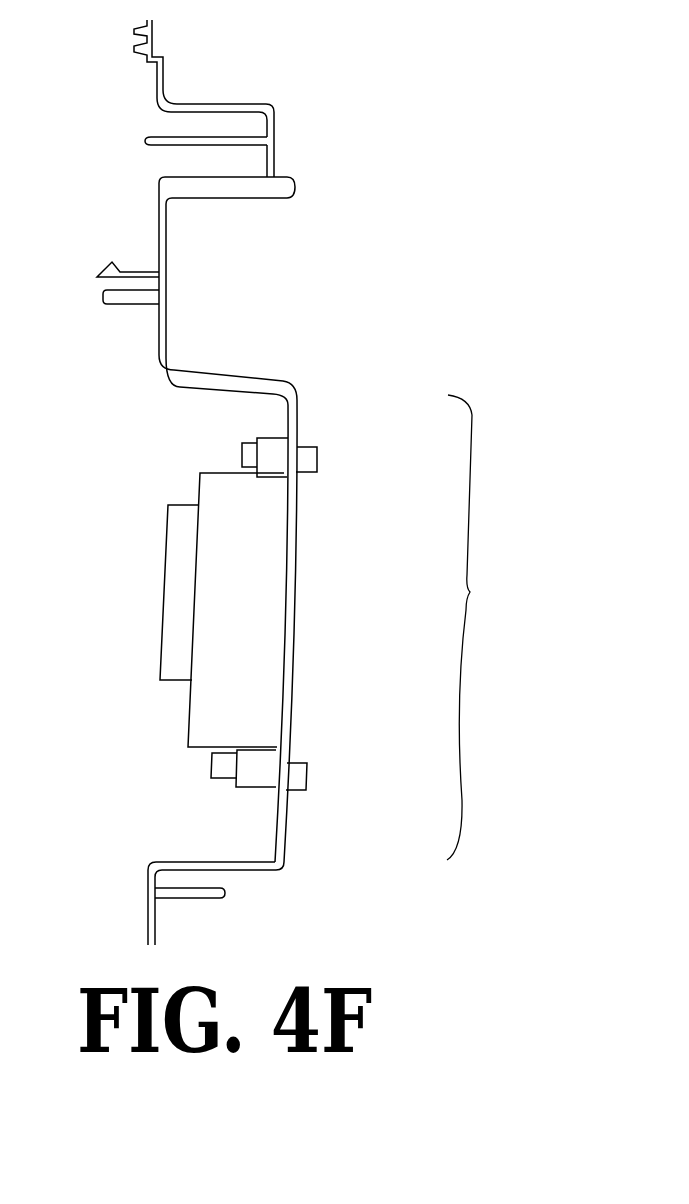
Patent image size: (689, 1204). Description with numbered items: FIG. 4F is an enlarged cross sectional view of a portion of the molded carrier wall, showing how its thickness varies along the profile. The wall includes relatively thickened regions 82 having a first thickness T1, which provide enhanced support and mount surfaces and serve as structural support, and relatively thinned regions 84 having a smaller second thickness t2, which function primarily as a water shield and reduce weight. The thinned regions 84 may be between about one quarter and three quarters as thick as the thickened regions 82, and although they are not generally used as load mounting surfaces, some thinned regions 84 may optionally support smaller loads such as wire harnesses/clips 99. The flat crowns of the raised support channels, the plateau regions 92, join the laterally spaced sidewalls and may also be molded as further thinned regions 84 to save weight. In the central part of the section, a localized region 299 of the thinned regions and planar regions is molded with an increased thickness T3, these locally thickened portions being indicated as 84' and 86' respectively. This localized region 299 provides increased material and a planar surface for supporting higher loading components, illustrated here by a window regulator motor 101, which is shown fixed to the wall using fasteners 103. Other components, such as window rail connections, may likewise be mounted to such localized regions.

The relatively thickened regions 82 is at (246, 198).
The relatively thinned regions 84 is at (110, 561).
The plateau regions 92 is at (157, 345).
The wire harnesses/clips 99 is at (100, 258).
The second thickness t2 is at (193, 253).
The first thickness T1 is at (207, 150).
The increased thickness T3 is at (225, 835).
The thinned region of increased thickness 84' is at (361, 631).
The planar region of increased thickness 86' is at (361, 631).
The window regulator motor 101 is at (210, 618).
The fasteners 103 is at (304, 750).
The localized region 299 is at (470, 591).